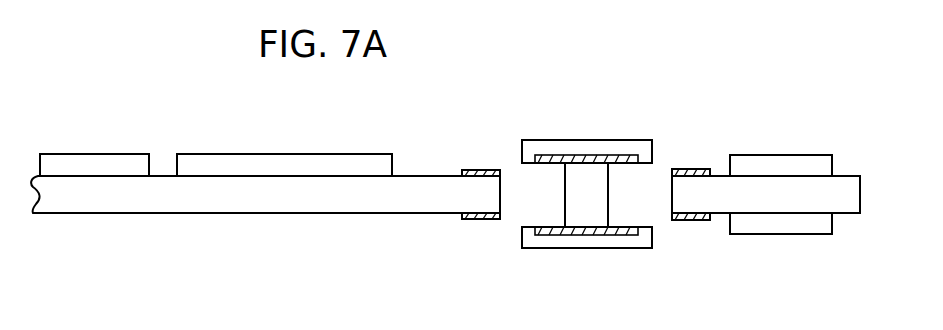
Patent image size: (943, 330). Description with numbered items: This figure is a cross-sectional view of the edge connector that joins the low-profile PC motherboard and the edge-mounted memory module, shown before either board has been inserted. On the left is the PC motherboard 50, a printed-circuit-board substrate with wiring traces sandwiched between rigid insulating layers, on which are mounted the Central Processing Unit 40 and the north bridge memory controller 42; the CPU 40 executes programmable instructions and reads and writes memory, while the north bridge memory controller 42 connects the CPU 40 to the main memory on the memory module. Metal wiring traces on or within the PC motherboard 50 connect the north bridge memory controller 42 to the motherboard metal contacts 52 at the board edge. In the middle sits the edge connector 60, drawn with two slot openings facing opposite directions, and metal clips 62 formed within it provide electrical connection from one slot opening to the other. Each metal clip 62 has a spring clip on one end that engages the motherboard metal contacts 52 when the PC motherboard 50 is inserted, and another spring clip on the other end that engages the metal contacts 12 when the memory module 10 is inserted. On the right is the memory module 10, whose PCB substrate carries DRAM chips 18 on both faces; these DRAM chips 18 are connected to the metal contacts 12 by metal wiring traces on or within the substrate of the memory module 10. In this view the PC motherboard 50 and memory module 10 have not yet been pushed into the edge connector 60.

The memory module 10 is at (785, 201).
The metal contacts 12 is at (698, 168).
The DRAM chips 18 is at (798, 155).
The Central Processing Unit (CPU) 40 is at (65, 154).
The north bridge memory controller 42 is at (392, 154).
The PC motherboard 50 is at (463, 202).
The motherboard metal contacts 52 is at (480, 219).
The edge connector 60 is at (598, 208).
The metal clips 62 is at (588, 156).